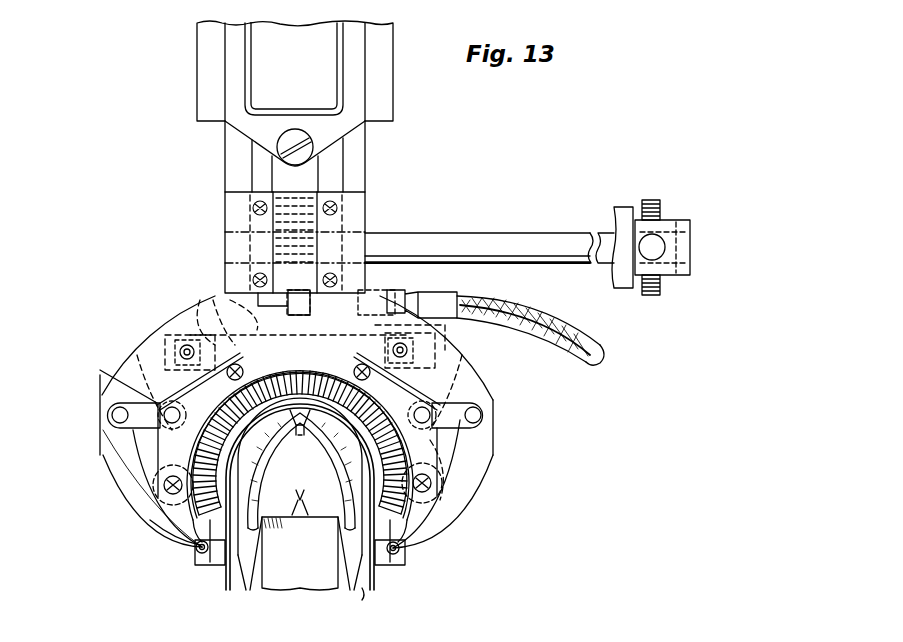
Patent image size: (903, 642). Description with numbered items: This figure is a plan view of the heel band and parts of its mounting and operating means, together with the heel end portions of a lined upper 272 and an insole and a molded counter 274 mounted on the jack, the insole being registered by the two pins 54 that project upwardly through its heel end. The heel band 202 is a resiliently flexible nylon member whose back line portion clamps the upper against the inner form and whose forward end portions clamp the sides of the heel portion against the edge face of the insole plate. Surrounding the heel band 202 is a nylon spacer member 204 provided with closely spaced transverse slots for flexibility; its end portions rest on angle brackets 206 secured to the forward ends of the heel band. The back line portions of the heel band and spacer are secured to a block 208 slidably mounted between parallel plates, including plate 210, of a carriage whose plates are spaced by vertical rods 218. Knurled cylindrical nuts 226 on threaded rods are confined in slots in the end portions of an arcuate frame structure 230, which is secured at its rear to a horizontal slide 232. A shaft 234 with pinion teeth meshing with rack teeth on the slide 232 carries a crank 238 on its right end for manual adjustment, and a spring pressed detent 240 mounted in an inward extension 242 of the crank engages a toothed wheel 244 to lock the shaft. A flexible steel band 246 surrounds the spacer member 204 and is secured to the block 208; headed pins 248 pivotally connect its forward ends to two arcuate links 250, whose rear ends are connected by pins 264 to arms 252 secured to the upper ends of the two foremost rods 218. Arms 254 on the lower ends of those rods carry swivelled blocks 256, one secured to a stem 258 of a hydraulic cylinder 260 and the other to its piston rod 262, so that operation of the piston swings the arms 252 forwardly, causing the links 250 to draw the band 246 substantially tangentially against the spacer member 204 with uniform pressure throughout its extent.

The pins 54 is at (301, 470).
The heel band 202 is at (238, 575).
The spacer member 204 is at (135, 462).
The angle brackets 206 is at (195, 560).
The block 208 is at (300, 360).
The plate 210 is at (445, 440).
The vertical rods 218 is at (115, 378).
The knurled cylindrical nuts 226 is at (152, 478).
The arcuate frame structure 230 is at (493, 420).
The horizontal slide 232 is at (290, 270).
The shaft 234 is at (414, 242).
The crank 238 is at (668, 286).
The spring pressed detent 240 is at (666, 246).
The inward extension 242 is at (632, 226).
The toothed wheel 244 is at (651, 206).
The flexible steel band 246 is at (160, 520).
The headed pins 248 is at (202, 556).
The arcuate links 250 is at (104, 440).
The arms 252 is at (118, 398).
The arms 254 is at (165, 350).
The block 256 is at (178, 342).
The stem 258 is at (470, 358).
The hydraulic cylinder 260 is at (258, 300).
The piston rod 262 is at (210, 312).
The pins 264 is at (112, 416).
The lined upper 272 is at (366, 596).
The counter 274 is at (345, 520).